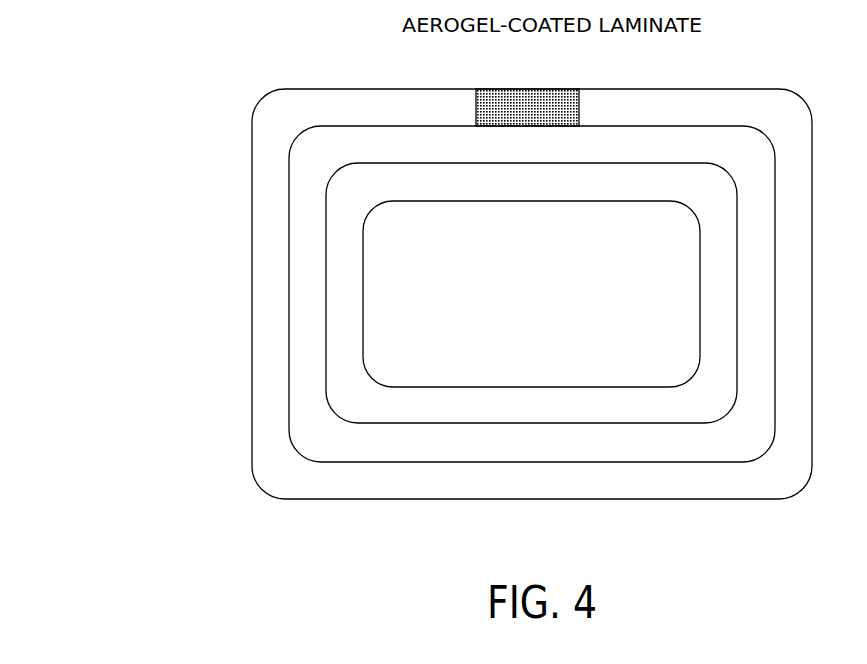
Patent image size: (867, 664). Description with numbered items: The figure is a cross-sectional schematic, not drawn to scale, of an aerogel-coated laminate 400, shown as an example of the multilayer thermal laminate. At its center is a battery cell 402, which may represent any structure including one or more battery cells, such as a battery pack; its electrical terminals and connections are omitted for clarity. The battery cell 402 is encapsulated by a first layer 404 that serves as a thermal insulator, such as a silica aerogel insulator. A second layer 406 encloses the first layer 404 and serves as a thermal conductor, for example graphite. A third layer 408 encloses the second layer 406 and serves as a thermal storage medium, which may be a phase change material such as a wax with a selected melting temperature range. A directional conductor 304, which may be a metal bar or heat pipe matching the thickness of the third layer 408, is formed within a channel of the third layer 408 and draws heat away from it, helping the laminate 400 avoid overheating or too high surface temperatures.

The aerogel-coated laminate 400 is at (141, 34).
The directional conductor 304 is at (531, 89).
The battery cell 402 is at (548, 322).
The first layer 404 is at (548, 417).
The second layer 406 is at (548, 456).
The third layer 408 is at (548, 492).